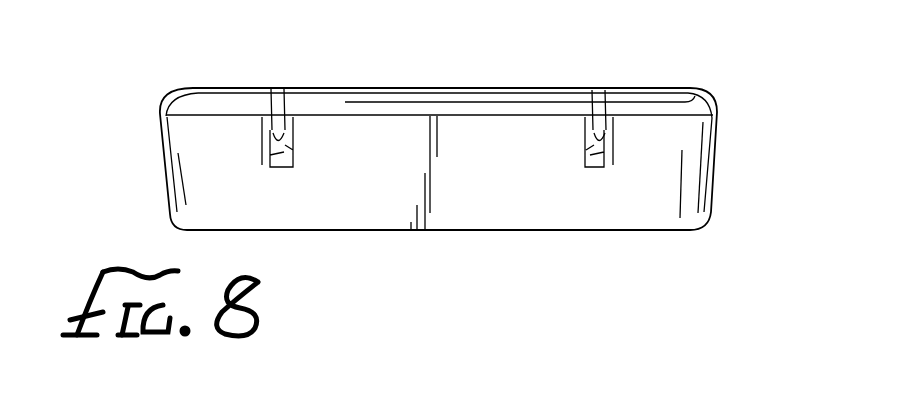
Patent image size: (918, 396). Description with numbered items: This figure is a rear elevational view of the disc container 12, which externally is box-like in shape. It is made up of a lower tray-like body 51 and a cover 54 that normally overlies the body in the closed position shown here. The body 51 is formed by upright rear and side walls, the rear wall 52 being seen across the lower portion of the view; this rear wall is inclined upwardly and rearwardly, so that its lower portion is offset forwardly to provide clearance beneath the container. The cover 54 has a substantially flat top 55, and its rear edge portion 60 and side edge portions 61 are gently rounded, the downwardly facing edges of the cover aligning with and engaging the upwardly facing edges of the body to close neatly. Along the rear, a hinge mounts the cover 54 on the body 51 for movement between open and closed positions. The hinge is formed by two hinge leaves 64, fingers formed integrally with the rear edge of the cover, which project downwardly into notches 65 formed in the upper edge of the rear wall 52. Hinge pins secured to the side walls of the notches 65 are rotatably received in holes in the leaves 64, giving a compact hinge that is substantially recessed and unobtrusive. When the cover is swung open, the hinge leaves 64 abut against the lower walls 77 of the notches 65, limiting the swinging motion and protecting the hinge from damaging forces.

The disc container 12 is at (728, 176).
The container body 51 is at (160, 172).
The rear wall 52 is at (502, 203).
The cover 54 is at (668, 92).
The top 55 is at (465, 87).
The rear edge portion 60 is at (232, 106).
The side edge portions 61 is at (175, 102).
The hinge leaves 64 is at (280, 100).
The notches 65 is at (294, 154).
The lower walls 77 is at (279, 167).